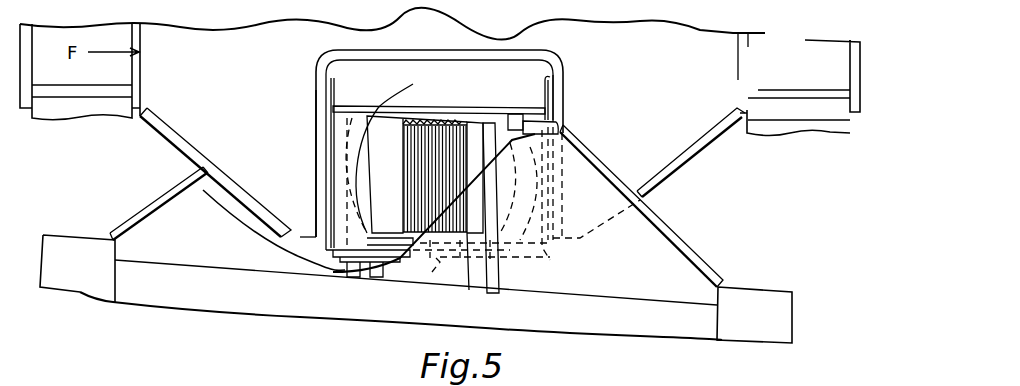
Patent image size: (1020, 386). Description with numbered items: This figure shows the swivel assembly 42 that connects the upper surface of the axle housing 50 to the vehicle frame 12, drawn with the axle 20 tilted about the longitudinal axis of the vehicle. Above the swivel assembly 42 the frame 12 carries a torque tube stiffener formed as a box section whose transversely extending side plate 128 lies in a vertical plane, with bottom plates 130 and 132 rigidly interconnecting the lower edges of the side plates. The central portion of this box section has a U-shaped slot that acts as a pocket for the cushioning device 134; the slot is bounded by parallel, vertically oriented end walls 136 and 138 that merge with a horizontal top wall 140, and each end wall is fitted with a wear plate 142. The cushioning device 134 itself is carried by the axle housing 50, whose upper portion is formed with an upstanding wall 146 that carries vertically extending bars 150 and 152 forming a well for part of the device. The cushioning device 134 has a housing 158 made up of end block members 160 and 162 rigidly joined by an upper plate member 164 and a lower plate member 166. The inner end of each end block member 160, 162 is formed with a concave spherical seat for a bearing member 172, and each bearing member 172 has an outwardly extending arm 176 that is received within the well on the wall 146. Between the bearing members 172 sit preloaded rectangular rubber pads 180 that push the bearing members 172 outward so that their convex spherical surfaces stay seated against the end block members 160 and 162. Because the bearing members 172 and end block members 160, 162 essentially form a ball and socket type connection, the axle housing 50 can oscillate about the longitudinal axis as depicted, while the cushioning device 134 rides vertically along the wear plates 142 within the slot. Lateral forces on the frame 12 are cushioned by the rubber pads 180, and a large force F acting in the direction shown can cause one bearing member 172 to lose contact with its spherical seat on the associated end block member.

The vehicle frame 12 is at (80, 131).
The swivel assembly 42 is at (215, 105).
The side plate 128 is at (218, 142).
The bottom plate 130 is at (249, 215).
The axle 20 is at (86, 300).
The axle housing 50 is at (175, 296).
The top wall 140 is at (436, 138).
The end wall 136 is at (316, 110).
The cushioning device 134 is at (548, 75).
The wear plate 142 is at (333, 97).
The upper plate member 164 is at (458, 108).
The arm 176 is at (383, 165).
The housing 158 is at (445, 102).
The rubber pads 180 is at (440, 132).
The vertical bar 150 is at (493, 285).
The end block member 160 is at (548, 115).
The bearing member 172 is at (577, 95).
The end wall 138 is at (560, 122).
The bottom plate 132 is at (702, 150).
The upstanding wall 146 is at (640, 230).
The vertical bar 152 is at (343, 268).
The end block member 162 is at (335, 183).
The lower plate member 166 is at (438, 260).